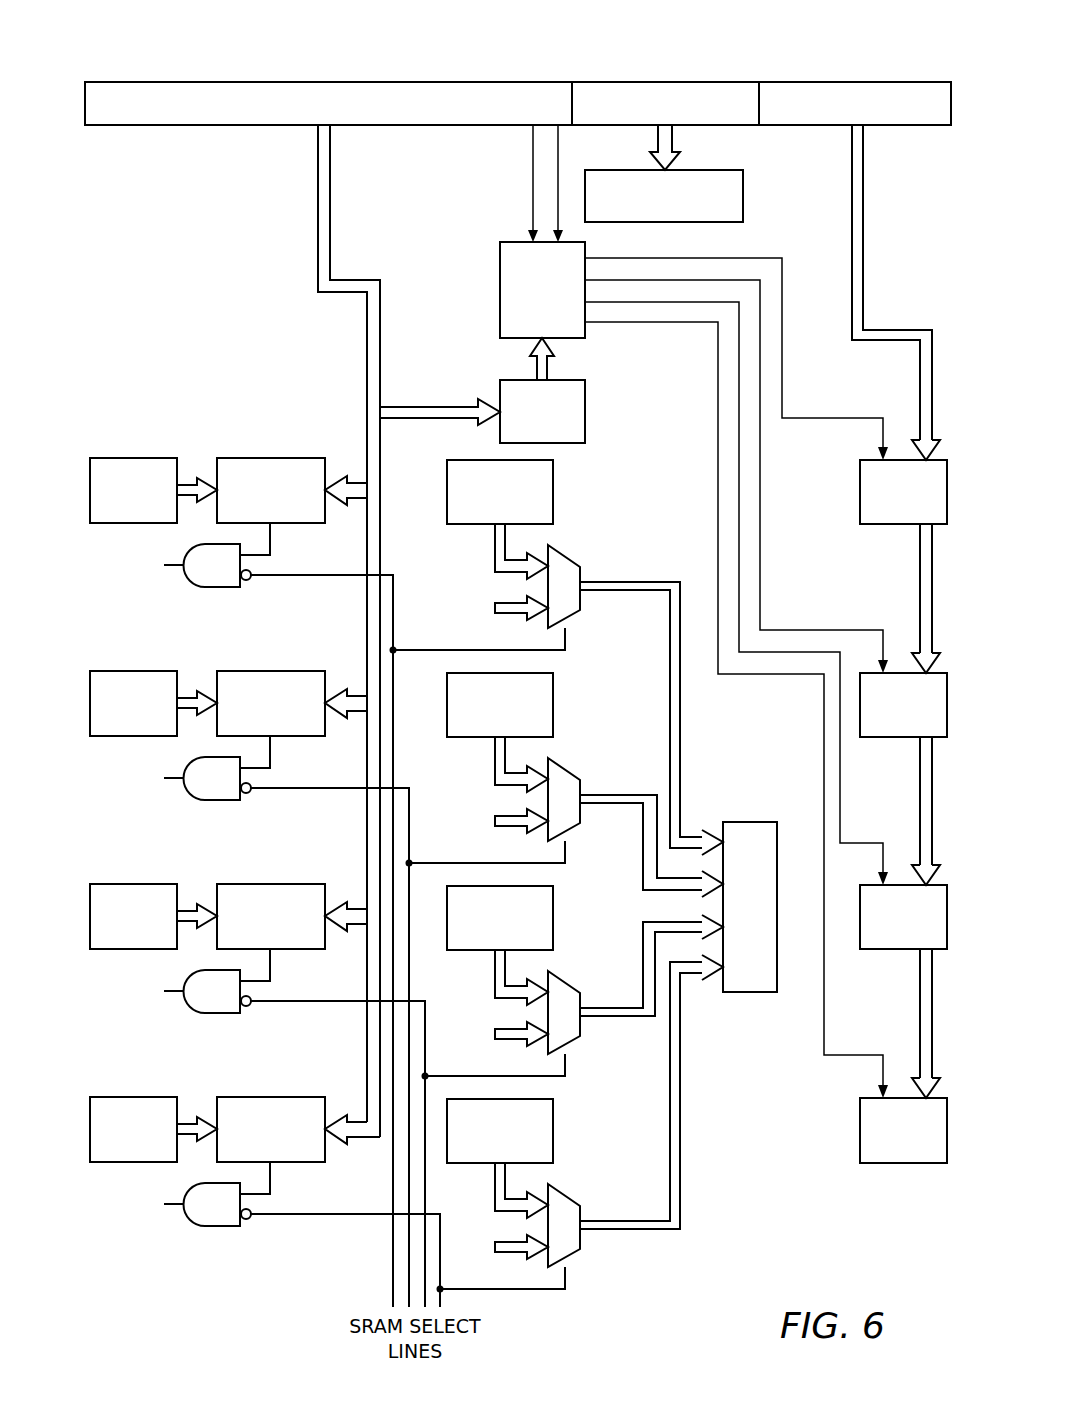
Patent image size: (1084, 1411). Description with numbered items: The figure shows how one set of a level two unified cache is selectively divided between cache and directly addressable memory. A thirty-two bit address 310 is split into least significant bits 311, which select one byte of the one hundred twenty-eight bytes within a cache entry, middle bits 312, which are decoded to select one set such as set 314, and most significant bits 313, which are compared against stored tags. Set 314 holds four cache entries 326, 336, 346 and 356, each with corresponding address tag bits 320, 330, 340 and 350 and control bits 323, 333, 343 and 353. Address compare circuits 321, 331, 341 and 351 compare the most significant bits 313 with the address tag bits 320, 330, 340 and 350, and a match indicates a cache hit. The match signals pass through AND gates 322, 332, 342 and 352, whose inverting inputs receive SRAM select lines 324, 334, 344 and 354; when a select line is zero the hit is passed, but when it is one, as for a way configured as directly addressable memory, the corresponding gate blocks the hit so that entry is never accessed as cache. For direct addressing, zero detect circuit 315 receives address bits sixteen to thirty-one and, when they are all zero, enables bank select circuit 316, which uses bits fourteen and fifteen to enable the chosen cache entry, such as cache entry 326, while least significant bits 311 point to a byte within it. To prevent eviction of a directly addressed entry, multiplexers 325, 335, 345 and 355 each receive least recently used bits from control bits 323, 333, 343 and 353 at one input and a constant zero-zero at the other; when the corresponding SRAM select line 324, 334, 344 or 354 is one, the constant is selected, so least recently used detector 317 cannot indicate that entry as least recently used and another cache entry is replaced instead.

The address 310 is at (217, 52).
The least significant bits 311 is at (855, 82).
The middle bits 312 is at (665, 82).
The most significant bits 313 is at (323, 82).
The set 314 is at (745, 196).
The zero detect circuit 315 is at (585, 412).
The bank select circuit 316 is at (500, 284).
The least recently used detector 317 is at (752, 822).
The address tag bits 320 is at (135, 458).
The address compare circuit 321 is at (272, 458).
The AND gate 322 is at (215, 587).
The control bits 323 is at (553, 492).
The SRAM select line 324 is at (568, 633).
The multiplexer circuit 325 is at (575, 555).
The cache entry 326 is at (900, 524).
The address tag bits 330 is at (135, 671).
The address compare circuit 331 is at (272, 671).
The AND gate 332 is at (215, 800).
The control bits 333 is at (553, 705).
The SRAM select line 334 is at (568, 846).
The multiplexer 335 is at (575, 768).
The cache entry 336 is at (900, 737).
The address tag bits 340 is at (135, 884).
The address compare circuit 341 is at (272, 884).
The AND gate 342 is at (215, 1013).
The control bits 343 is at (553, 918).
The SRAM select line 344 is at (568, 1059).
The multiplexer 345 is at (575, 981).
The cache entry 346 is at (900, 949).
The address tag bits 350 is at (135, 1097).
The address compare circuit 351 is at (272, 1097).
The AND gate 352 is at (215, 1226).
The control bits 353 is at (553, 1131).
The SRAM select line 354 is at (568, 1272).
The multiplexer 355 is at (575, 1194).
The cache entry 356 is at (900, 1163).